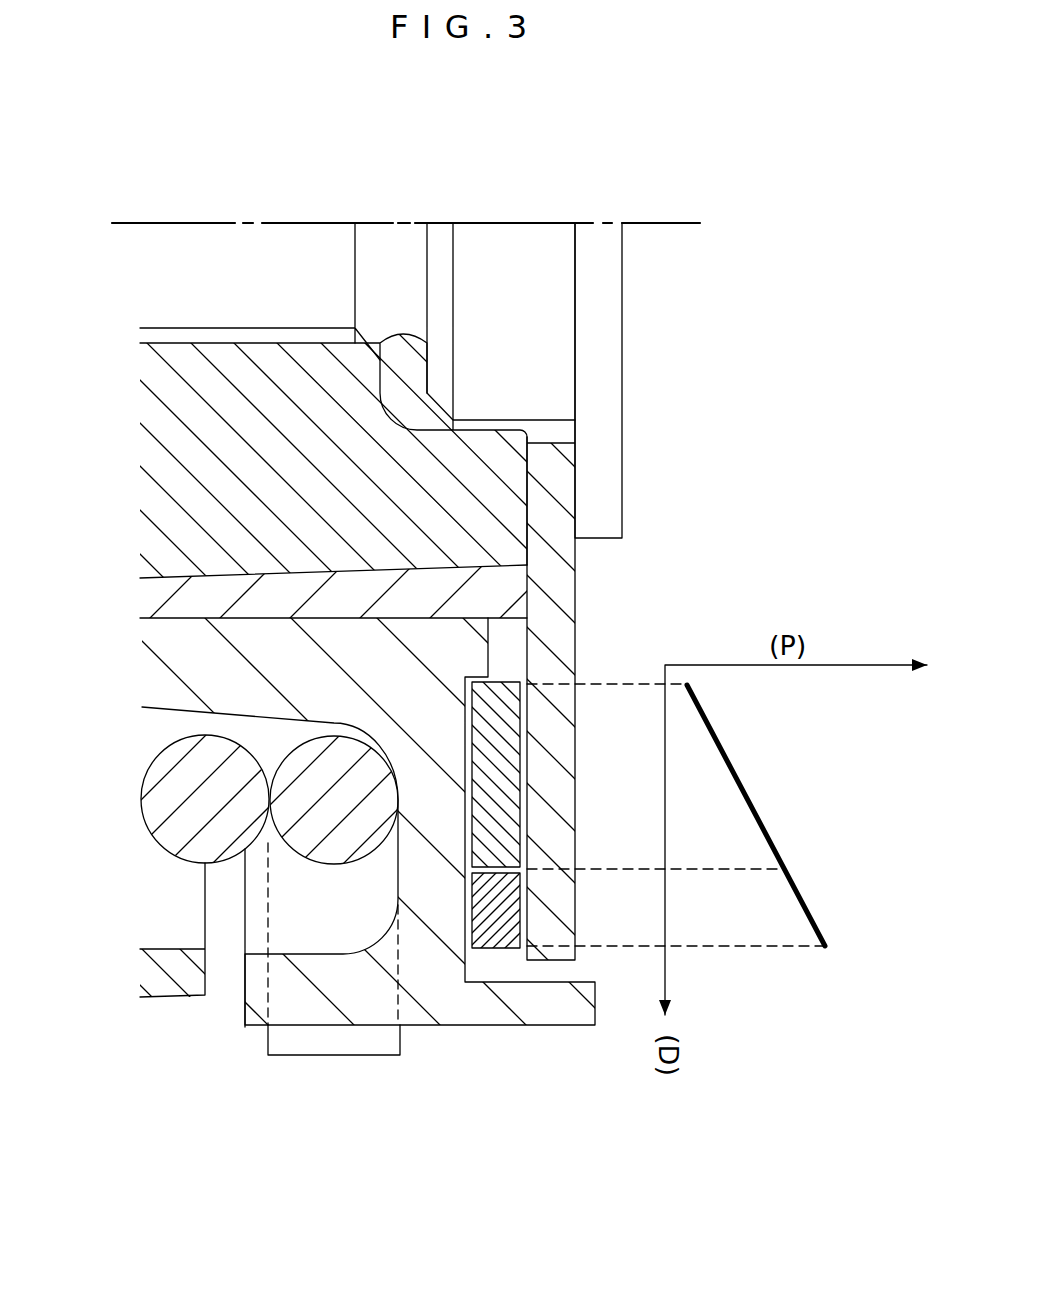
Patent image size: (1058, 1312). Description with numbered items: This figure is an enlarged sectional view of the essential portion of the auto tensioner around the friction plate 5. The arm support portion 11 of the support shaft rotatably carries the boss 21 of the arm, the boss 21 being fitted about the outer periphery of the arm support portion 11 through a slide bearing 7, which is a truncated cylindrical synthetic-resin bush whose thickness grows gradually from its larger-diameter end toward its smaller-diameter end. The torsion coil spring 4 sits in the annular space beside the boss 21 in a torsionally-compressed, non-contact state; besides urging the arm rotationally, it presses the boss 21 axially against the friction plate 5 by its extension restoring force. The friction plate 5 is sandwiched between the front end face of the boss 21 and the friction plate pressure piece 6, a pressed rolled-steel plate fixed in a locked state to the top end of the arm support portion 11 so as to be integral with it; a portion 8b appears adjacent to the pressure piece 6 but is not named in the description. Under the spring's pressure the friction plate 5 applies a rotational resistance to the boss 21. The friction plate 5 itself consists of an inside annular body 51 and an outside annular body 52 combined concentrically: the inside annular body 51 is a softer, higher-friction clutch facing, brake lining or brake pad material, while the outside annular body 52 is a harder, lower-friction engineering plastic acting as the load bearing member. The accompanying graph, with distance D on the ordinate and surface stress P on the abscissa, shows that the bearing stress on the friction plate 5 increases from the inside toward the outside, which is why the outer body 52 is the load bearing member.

The arm support portion 11 is at (150, 453).
The slide bearing 7 is at (155, 597).
The boss 21 is at (165, 670).
The torsion coil spring 4 is at (150, 787).
The friction plate pressure piece 6 is at (567, 593).
The shaft portion 8b is at (608, 298).
The friction plate 5 is at (466, 912).
The inside annular body 51 is at (477, 818).
The outside annular body 52 is at (497, 938).